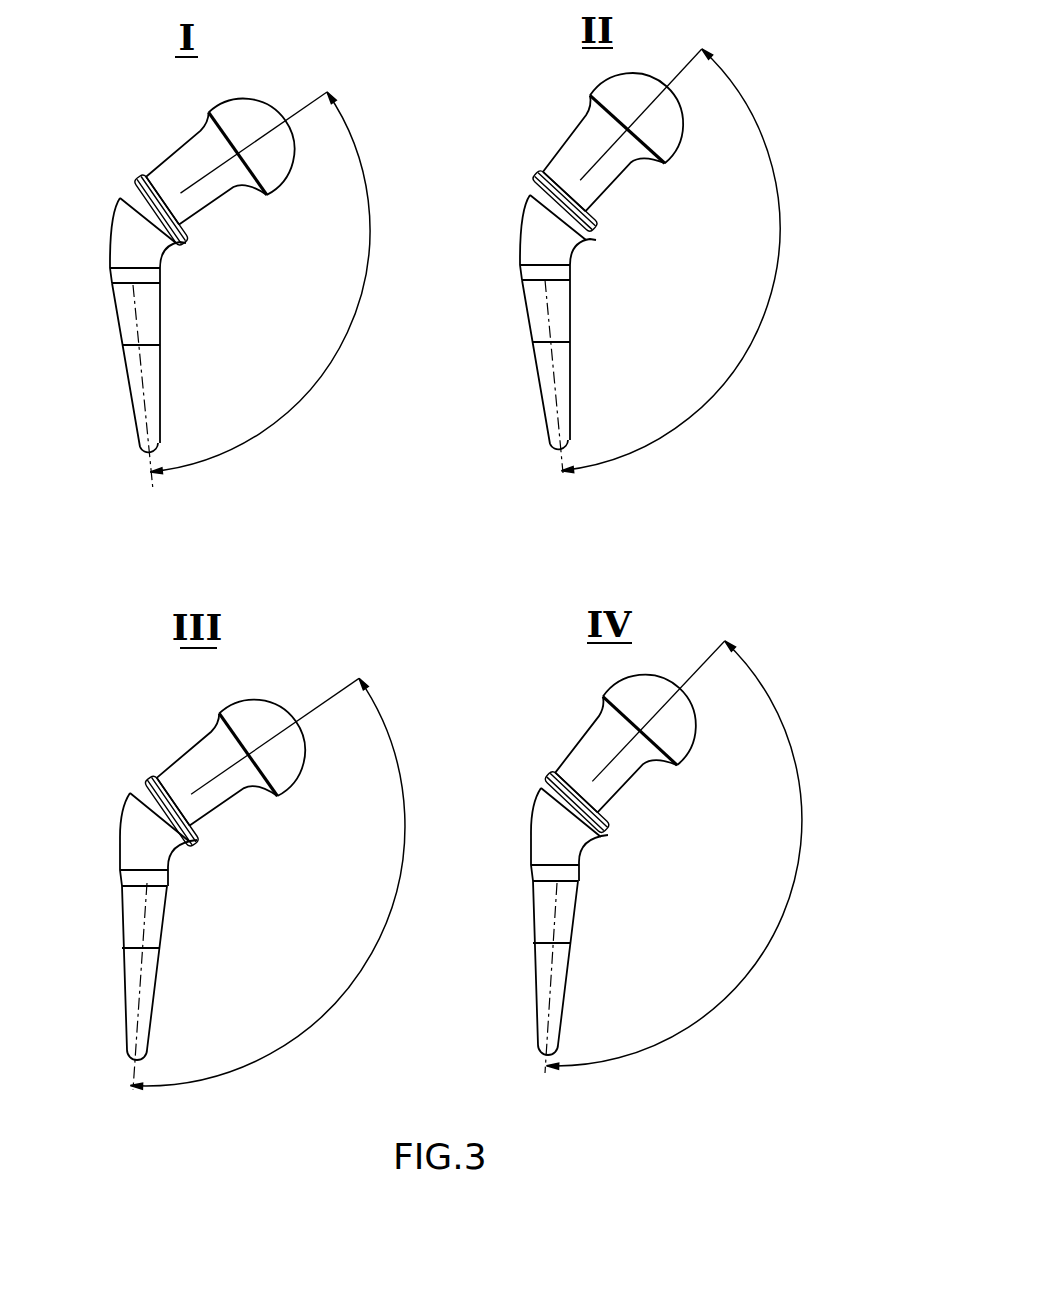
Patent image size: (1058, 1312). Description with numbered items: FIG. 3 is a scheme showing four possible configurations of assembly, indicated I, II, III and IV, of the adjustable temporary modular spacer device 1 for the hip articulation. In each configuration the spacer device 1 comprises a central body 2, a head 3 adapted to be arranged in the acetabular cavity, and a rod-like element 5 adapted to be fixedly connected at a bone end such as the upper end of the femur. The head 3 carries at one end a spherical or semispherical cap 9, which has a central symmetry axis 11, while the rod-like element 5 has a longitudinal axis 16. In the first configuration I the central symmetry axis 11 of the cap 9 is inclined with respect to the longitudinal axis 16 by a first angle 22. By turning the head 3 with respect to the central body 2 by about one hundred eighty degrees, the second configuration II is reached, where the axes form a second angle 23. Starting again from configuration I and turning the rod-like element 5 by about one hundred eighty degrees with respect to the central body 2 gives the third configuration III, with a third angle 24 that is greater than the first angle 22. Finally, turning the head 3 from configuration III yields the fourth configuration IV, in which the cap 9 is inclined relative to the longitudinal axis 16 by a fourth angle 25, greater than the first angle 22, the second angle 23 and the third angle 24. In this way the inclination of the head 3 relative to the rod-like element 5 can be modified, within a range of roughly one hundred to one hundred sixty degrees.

The adjustable temporary modular spacer device 1 is at (118, 174).
The central body 2 is at (109, 243).
The head 3 is at (182, 151).
The rod-like element 5 is at (117, 317).
The cap 9 is at (288, 176).
The central symmetry axis 11 is at (296, 112).
The longitudinal axis 16 is at (140, 400).
The first angle 22 is at (260, 281).
The second angle 23 is at (671, 260).
The third angle 24 is at (268, 883).
The fourth angle 25 is at (674, 854).